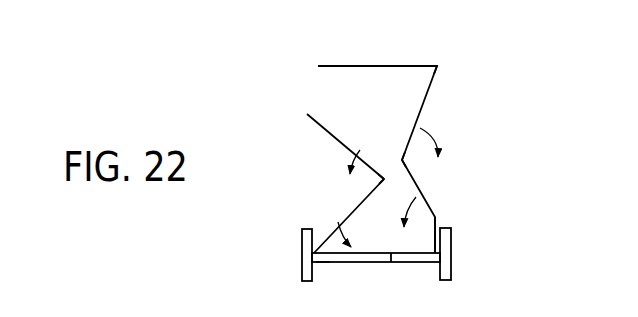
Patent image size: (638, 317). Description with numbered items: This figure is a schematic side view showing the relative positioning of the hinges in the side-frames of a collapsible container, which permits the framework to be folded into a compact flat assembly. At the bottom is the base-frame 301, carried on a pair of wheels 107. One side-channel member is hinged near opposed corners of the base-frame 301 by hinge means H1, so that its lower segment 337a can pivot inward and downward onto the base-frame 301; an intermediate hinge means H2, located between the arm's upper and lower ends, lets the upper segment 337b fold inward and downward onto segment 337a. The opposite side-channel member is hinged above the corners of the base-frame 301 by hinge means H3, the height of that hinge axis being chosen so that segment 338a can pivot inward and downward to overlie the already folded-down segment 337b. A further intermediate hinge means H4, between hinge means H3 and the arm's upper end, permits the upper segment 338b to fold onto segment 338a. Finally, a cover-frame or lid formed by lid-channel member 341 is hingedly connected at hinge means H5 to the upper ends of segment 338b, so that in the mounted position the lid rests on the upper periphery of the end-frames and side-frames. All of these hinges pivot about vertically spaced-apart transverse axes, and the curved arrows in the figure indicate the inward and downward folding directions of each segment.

The lid-channel member 341 is at (375, 66).
The upper segment of side-channel member 338b is at (423, 108).
The lower segment of side-channel member 338a is at (416, 183).
The upper segment of side-channel member 337b is at (316, 122).
The lower segment of side-channel member 337a is at (330, 240).
The wheels 107 is at (302, 256).
The base-frame 301 is at (393, 262).
The hinge means H1 is at (322, 262).
The hinge means H2 is at (381, 181).
The hinge means H3 is at (438, 217).
The hinge means H4 is at (401, 160).
The hinge means H5 is at (437, 66).